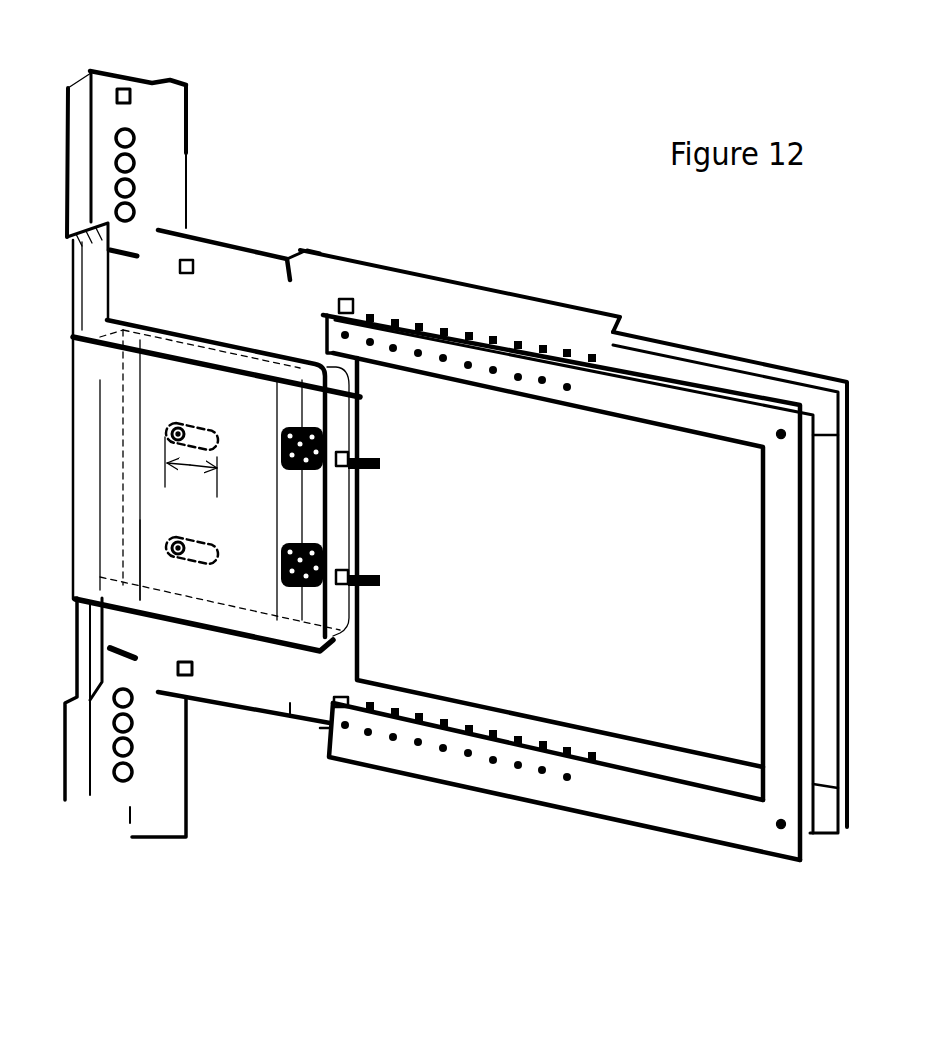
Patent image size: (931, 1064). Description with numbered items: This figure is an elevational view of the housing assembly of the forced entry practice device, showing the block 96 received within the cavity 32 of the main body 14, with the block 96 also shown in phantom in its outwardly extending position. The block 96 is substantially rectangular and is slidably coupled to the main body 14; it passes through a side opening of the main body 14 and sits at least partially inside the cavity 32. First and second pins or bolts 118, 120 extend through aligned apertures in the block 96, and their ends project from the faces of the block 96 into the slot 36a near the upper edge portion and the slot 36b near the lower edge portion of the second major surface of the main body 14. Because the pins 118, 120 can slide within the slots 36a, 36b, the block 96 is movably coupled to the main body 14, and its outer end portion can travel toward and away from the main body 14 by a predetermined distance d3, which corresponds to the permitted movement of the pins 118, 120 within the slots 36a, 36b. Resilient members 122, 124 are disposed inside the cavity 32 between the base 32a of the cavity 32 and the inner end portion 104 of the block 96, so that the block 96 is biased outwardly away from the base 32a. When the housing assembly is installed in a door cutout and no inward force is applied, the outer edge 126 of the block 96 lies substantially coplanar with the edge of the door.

The main body 14 is at (155, 287).
The cavity 32 is at (313, 500).
The base of the cavity 32a is at (340, 530).
The slot 36a is at (203, 420).
The slot 36b is at (217, 570).
The block 96 is at (153, 495).
The inner end portion 104 is at (287, 520).
The first pin 118 is at (180, 420).
The second pin 120 is at (183, 560).
The resilient member 122 is at (337, 452).
The resilient member 124 is at (323, 588).
The outer edge 126 is at (113, 490).
The predetermined distance d3 is at (190, 462).